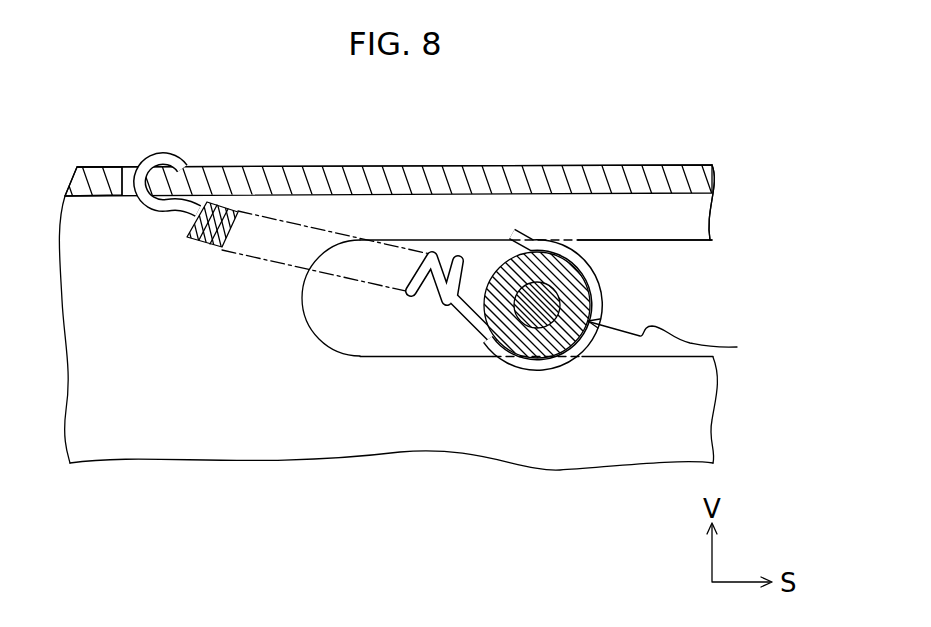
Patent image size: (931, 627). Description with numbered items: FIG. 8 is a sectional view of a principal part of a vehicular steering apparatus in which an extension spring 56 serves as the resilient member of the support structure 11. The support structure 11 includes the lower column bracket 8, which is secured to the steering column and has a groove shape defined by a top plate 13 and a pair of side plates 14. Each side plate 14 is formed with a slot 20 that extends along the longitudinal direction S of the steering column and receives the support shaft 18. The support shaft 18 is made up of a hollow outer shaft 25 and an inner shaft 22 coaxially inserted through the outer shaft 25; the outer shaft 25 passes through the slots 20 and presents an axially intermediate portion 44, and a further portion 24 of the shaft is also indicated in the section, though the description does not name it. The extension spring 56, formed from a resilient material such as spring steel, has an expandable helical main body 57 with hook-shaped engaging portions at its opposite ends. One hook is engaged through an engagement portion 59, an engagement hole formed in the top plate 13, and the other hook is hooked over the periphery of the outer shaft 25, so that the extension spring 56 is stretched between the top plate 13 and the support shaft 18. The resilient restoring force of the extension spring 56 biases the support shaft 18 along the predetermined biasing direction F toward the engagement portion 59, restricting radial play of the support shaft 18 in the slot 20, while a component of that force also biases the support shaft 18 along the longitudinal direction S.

The lower column bracket 8 is at (720, 201).
The support structure 11 is at (683, 151).
The top plate 13 is at (595, 172).
The side plate 14 is at (698, 230).
The support shaft 18 is at (539, 405).
The slot 20 is at (697, 243).
The inner shaft 22 is at (538, 320).
The core 24 is at (525, 318).
The outer shaft 25 is at (539, 405).
The axially intermediate portion 44 is at (507, 328).
The extension spring 56 is at (238, 211).
The helical main body 57 is at (313, 224).
The engagement portion 59 is at (128, 167).
The biasing direction F is at (671, 341).